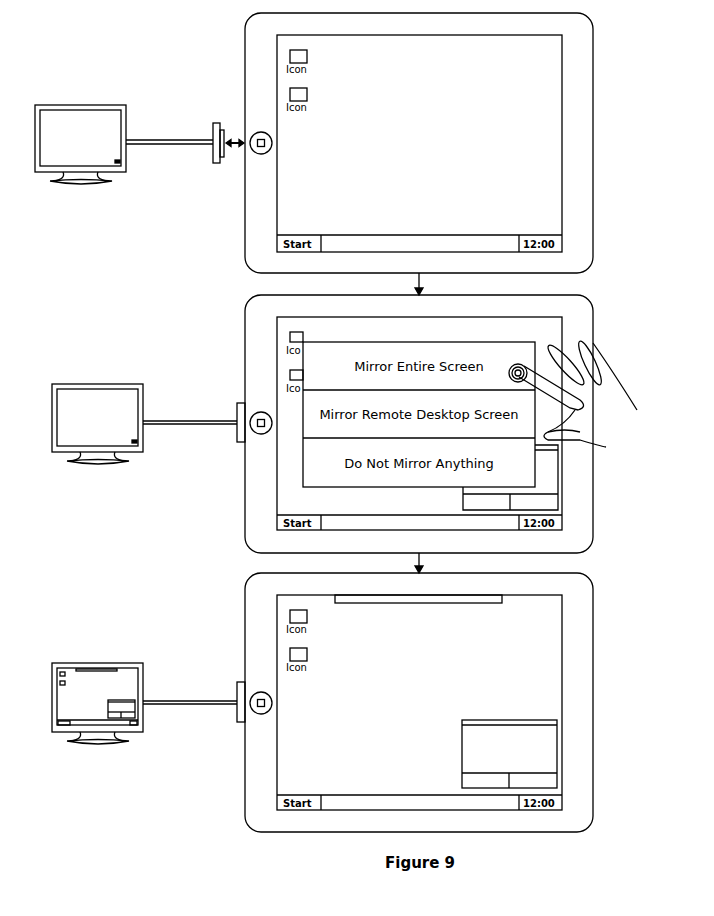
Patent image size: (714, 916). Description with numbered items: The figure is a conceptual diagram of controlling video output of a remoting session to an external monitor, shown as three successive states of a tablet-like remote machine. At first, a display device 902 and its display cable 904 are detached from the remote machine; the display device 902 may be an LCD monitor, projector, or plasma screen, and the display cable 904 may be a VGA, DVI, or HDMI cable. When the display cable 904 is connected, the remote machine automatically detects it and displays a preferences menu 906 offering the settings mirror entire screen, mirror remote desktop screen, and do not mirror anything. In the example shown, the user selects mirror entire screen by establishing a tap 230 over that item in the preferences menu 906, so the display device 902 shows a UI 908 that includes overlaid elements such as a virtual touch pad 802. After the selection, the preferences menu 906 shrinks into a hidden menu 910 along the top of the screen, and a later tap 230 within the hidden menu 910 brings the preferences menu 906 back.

The display device 902 is at (127, 113).
The display cable 904 is at (176, 147).
The tap 230 is at (514, 364).
The preferences menu 906 is at (530, 356).
The virtual touch pad 802 is at (559, 479).
The UI 908 is at (142, 674).
The hidden menu 910 is at (462, 606).